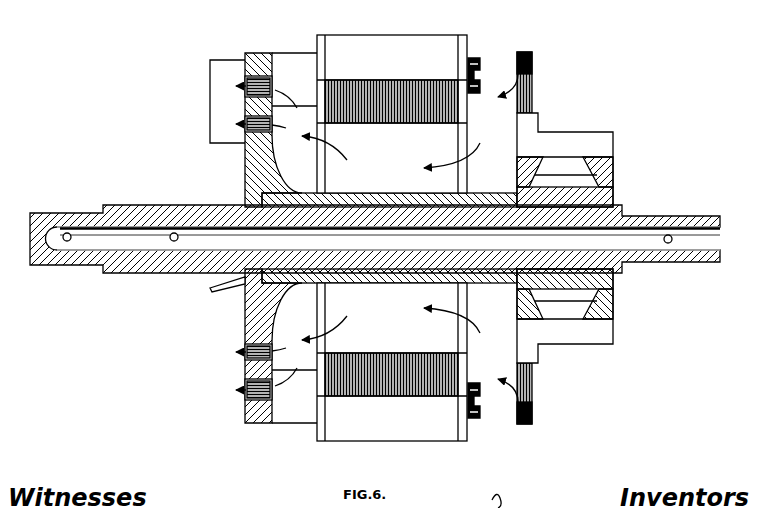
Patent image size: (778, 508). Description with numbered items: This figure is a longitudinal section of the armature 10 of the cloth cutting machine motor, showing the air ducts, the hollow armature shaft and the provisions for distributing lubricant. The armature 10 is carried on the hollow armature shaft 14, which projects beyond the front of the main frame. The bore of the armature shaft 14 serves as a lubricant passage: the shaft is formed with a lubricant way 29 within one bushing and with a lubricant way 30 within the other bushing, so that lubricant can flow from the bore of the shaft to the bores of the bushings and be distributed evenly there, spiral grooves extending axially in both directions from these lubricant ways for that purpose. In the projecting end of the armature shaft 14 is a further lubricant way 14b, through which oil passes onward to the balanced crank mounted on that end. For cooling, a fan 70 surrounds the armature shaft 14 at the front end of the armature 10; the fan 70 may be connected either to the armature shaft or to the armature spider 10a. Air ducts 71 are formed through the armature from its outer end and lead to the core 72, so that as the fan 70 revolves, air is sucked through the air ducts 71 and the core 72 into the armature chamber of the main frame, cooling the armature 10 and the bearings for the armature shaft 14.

The armature 10 is at (262, 326).
The armature spider 10a is at (320, 82).
The armature shaft 14 is at (137, 268).
The lubricant way 14b is at (67, 233).
The lubricant way 29 is at (668, 235).
The lubricant way 30 is at (174, 241).
The fan 70 is at (245, 154).
The air ducts 71 is at (596, 58).
The core 72 is at (417, 155).